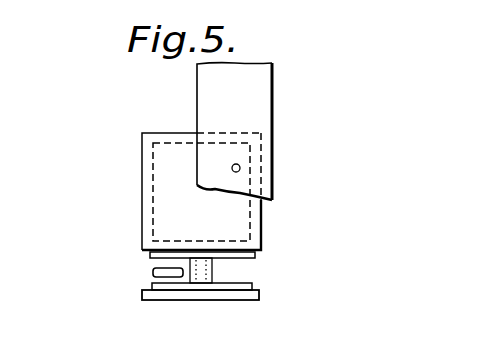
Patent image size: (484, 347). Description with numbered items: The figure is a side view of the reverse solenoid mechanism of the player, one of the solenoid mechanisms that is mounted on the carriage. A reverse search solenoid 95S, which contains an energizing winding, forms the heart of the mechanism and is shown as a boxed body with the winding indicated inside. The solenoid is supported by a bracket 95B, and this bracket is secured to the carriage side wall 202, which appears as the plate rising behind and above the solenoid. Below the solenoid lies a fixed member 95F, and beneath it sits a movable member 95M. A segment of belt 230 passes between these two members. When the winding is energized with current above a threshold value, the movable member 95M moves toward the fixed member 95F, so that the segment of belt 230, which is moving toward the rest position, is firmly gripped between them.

The carriage side wall 202 is at (272, 82).
The bracket 95B is at (261, 222).
The reverse search solenoid 95S is at (142, 229).
The fixed member 95F is at (255, 259).
The belt 230 is at (153, 272).
The movable member 95M is at (259, 296).